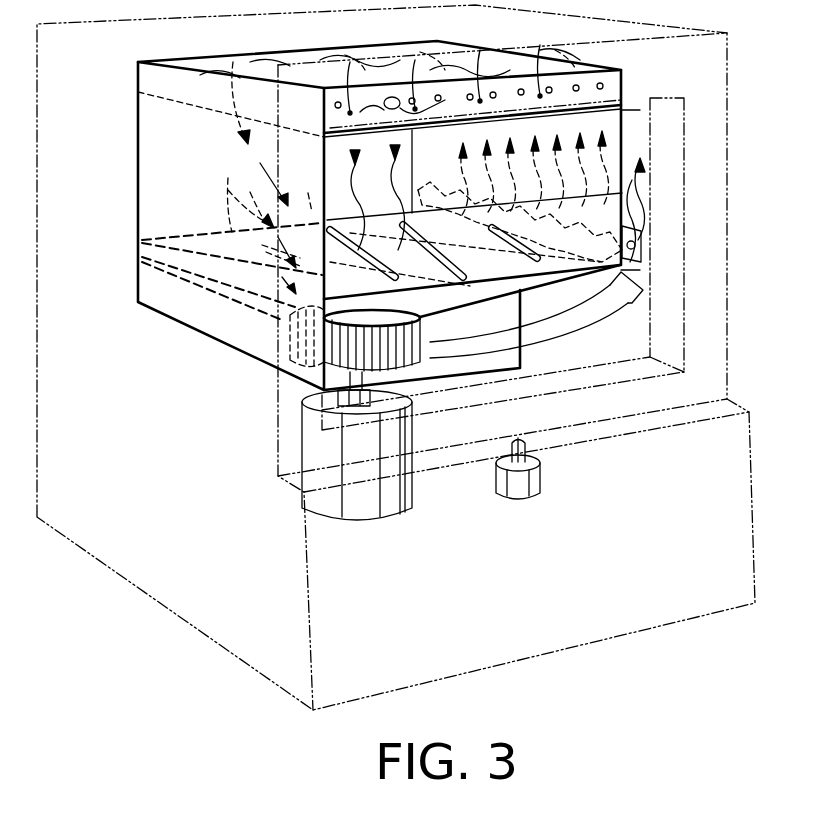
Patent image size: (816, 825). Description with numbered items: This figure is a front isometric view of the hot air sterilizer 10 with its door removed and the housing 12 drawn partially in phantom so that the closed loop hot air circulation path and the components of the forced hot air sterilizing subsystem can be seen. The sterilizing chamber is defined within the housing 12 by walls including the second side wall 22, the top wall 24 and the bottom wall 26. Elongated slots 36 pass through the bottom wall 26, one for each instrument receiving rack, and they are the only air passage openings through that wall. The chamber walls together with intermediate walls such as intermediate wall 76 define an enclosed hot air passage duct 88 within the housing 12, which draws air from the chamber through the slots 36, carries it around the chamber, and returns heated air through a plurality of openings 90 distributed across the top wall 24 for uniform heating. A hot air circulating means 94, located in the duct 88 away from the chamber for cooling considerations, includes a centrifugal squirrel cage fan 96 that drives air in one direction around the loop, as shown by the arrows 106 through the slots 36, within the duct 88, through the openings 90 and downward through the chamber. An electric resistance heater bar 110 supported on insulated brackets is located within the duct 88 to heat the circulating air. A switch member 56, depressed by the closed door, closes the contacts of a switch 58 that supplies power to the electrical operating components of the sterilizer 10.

The hot air sterilizer 10 is at (176, 617).
The housing 12 is at (166, 412).
The second side wall 22 is at (648, 140).
The top wall 24 is at (469, 121).
The bottom wall 26 is at (642, 233).
The openings 36 is at (275, 237).
The switch member 56 is at (542, 473).
The switch 58 is at (501, 487).
The intermediate wall 76 is at (655, 165).
The hot air passage duct 88 is at (640, 205).
The openings 90 is at (402, 107).
The hot air circulating means 94 is at (310, 404).
The centrifugal fan 96 is at (400, 342).
The arrows 106 is at (345, 48).
The heater bar 110 is at (540, 213).